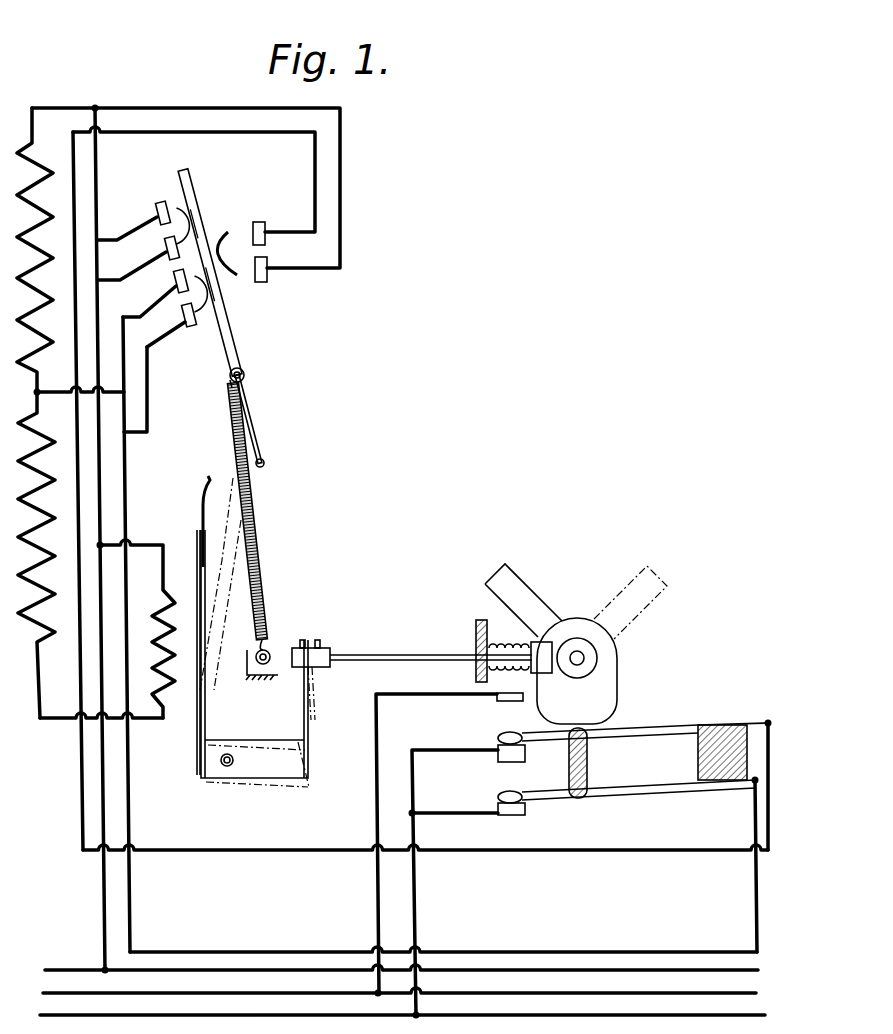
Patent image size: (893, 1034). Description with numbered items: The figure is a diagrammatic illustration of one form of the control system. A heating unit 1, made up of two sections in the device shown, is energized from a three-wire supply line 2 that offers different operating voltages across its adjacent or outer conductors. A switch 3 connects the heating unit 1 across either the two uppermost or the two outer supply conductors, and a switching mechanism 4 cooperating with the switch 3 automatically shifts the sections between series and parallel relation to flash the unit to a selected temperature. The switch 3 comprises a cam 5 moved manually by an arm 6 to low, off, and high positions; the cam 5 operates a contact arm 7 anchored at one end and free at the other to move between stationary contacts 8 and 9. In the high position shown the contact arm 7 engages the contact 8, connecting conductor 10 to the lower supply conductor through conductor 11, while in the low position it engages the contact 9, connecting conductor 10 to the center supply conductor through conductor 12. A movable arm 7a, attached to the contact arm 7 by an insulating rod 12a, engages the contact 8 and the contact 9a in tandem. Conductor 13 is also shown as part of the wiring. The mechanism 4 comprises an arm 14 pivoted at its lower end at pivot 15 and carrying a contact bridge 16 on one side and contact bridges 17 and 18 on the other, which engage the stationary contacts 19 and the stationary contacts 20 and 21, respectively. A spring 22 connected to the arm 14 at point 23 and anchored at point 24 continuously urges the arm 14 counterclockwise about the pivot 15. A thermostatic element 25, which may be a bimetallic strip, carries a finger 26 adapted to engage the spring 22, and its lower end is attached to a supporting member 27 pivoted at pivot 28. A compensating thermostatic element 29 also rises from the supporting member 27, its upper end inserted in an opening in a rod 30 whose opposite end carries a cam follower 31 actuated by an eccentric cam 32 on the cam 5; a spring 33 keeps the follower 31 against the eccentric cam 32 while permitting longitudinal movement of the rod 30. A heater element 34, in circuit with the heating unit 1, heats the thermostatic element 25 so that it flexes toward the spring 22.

The heating unit 1 is at (43, 476).
The three-wire supply line 2 is at (305, 1015).
The switch 3 is at (489, 619).
The switching mechanism 4 is at (242, 424).
The cam 5 is at (593, 655).
The arm 6 is at (485, 586).
The contact arm 7 is at (615, 723).
The movable arm 7a is at (622, 790).
The stationary contact 8 is at (526, 754).
The stationary contact 9 is at (502, 701).
The contact 9a is at (528, 814).
The conductor 10 is at (615, 852).
The conductor 11 is at (415, 821).
The conductor 12 is at (377, 815).
The insulating rod 12a is at (589, 760).
The conductor 13 is at (101, 879).
The arm 14 is at (231, 329).
The pivot 15 is at (266, 464).
The contact bridge 16 is at (233, 252).
The contact bridge 17 is at (211, 320).
The contact bridge 18 is at (176, 210).
The stationary contacts 19 is at (260, 221).
The stationary contact 20 is at (175, 280).
The stationary contact 21 is at (156, 210).
The spring 22 is at (264, 541).
The connection point 23 is at (248, 373).
The anchor point 24 is at (268, 656).
The thermostatic element 25 is at (196, 591).
The finger 26 is at (200, 487).
The supporting member 27 is at (286, 780).
The pivot 28 is at (223, 767).
The compensating thermostatic element 29 is at (313, 718).
The rod 30 is at (369, 656).
The cam follower 31 is at (542, 673).
The eccentric cam 32 is at (570, 639).
The spring 33 is at (502, 651).
The heater element 34 is at (157, 647).